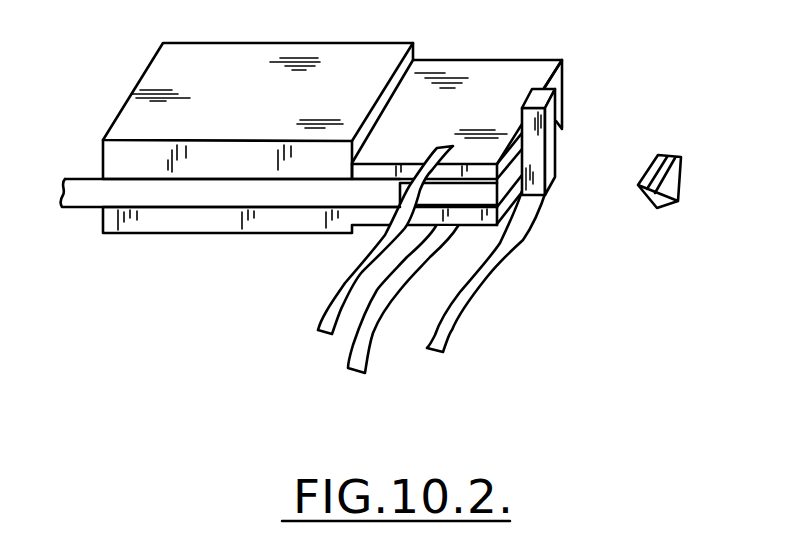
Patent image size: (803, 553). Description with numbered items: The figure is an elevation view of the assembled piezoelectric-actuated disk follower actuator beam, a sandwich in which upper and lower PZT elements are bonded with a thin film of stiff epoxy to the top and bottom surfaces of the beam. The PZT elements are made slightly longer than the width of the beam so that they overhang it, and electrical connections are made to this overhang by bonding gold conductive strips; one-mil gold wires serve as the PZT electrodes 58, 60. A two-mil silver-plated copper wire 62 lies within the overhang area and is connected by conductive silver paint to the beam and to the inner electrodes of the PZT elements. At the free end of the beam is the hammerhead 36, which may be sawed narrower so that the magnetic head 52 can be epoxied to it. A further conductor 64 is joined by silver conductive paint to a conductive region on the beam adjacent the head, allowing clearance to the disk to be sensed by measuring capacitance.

The hammerhead 36 is at (553, 162).
The magnetic head 52 is at (686, 177).
The PZT electrode 58 is at (335, 305).
The PZT electrode 60 is at (375, 347).
The silver-plated copper wire 62 is at (81, 178).
The conductor 64 is at (513, 252).